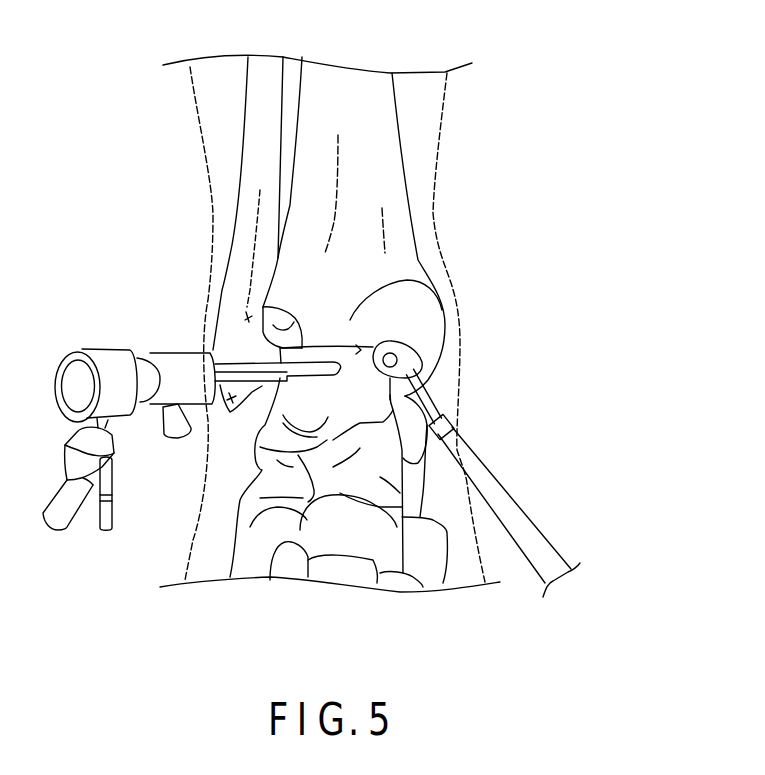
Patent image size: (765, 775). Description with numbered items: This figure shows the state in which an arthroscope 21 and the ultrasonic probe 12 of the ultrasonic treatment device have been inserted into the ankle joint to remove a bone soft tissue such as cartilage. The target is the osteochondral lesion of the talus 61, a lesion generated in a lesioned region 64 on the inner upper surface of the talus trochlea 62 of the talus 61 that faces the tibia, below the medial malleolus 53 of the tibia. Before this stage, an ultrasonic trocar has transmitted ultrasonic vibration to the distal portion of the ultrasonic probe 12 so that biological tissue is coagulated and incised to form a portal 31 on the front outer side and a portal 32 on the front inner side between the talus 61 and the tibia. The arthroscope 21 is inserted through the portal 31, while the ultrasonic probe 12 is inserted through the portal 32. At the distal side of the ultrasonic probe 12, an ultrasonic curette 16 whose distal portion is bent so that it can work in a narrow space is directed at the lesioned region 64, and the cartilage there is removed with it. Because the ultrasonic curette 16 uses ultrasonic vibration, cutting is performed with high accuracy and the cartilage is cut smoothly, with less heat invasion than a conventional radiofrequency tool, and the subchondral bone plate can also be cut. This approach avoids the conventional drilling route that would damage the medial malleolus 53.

The ultrasonic probe 12 is at (533, 517).
The ultrasonic curette 16 is at (400, 340).
The arthroscope 21 is at (100, 352).
The portal 31 is at (263, 307).
The portal 32 is at (417, 387).
The medial malleolus 53 is at (432, 314).
The talus 61 is at (400, 573).
The talus trochlea 62 is at (340, 385).
The lesioned region 64 is at (303, 330).